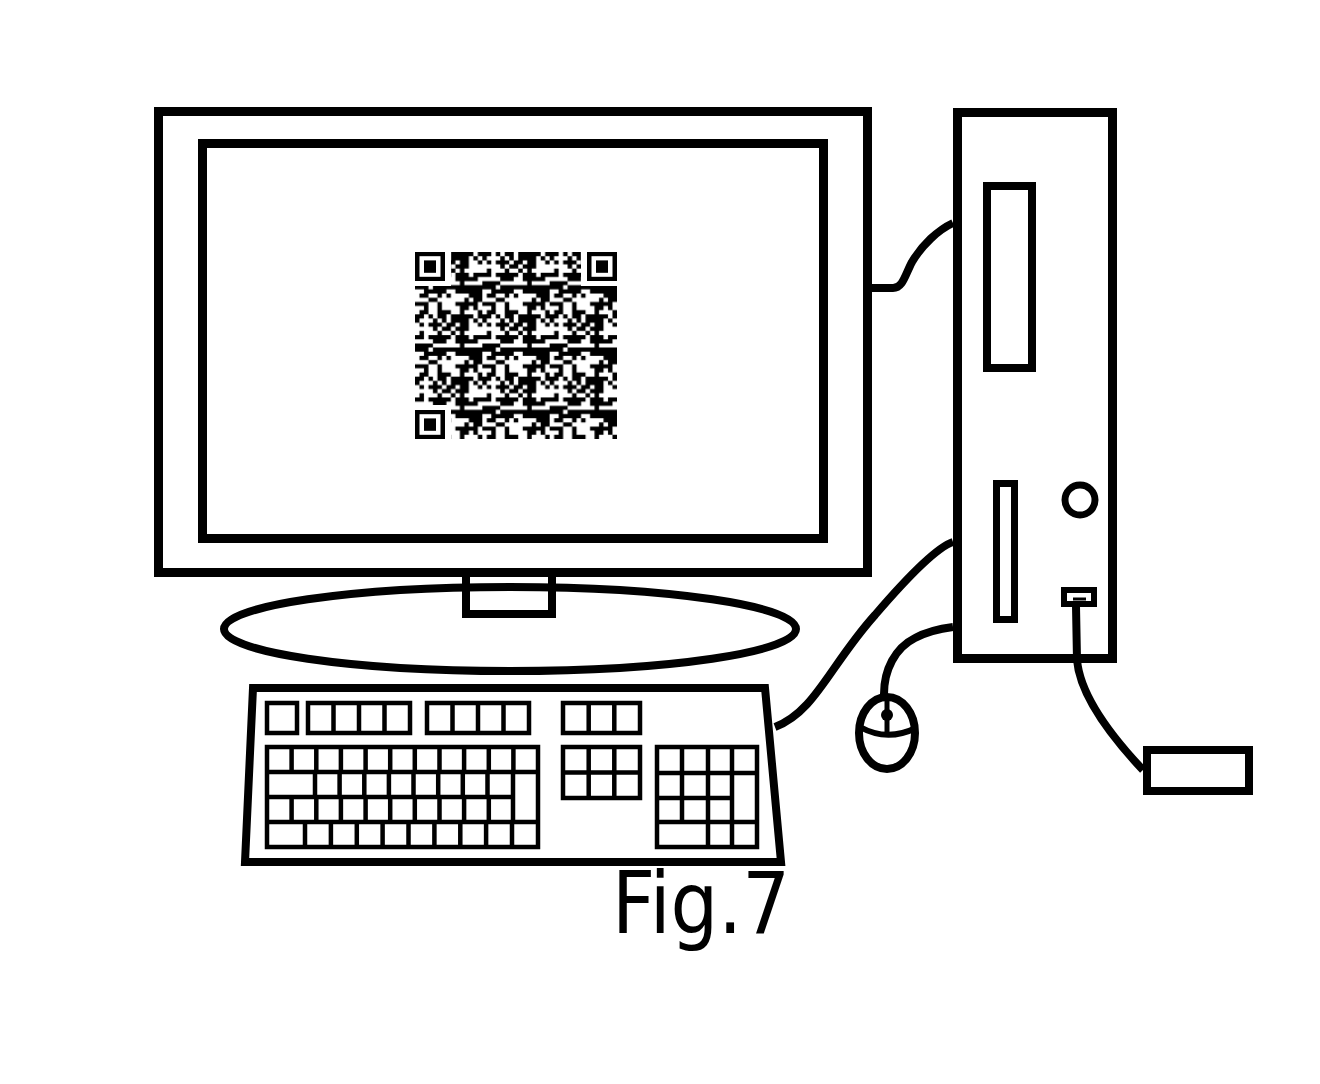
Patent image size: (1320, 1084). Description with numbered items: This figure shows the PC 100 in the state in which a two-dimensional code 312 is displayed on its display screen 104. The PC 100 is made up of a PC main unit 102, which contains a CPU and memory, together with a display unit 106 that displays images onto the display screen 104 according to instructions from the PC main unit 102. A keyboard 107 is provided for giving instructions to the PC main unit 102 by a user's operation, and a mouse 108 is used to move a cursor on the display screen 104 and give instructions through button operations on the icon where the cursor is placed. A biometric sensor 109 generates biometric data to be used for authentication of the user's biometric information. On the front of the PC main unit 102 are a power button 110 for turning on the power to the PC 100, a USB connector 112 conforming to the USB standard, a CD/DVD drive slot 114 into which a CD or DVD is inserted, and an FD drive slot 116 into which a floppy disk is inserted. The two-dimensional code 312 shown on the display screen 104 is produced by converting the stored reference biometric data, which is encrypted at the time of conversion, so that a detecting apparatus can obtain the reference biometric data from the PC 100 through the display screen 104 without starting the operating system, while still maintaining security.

The PC 100 is at (1223, 94).
The PC main unit 102 is at (1064, 365).
The display screen 104 is at (243, 519).
The display unit 106 is at (351, 118).
The keyboard 107 is at (256, 741).
The mouse 108 is at (857, 751).
The biometric sensor 109 is at (1191, 760).
The power button 110 is at (1095, 501).
The USB connector 112 is at (1097, 594).
The CD/DVD drive slot 114 is at (1020, 263).
The FD drive slot 116 is at (1003, 490).
The two-dimensional code 312 is at (415, 345).